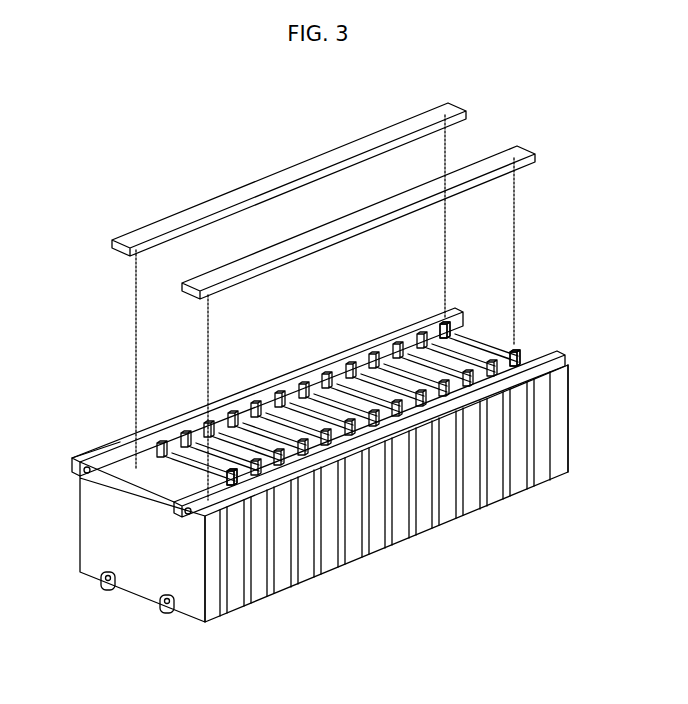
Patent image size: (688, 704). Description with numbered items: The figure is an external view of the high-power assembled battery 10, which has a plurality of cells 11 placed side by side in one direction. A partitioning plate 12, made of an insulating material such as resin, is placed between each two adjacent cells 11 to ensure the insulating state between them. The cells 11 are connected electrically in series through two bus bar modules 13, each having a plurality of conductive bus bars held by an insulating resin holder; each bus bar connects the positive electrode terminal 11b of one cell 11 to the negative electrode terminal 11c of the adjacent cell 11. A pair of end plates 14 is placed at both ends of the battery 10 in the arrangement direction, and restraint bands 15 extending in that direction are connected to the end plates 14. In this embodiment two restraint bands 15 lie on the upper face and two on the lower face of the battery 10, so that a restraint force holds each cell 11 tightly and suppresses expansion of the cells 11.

The high-power assembled battery 10 is at (398, 597).
The cell 11 is at (470, 347).
The positive electrode terminal 11b is at (512, 355).
The negative electrode terminal 11c is at (437, 323).
The partitioning plate 12 is at (392, 368).
The bus bar module 13 is at (242, 197).
The end plate 14 is at (562, 408).
The restraint band 15 is at (287, 380).